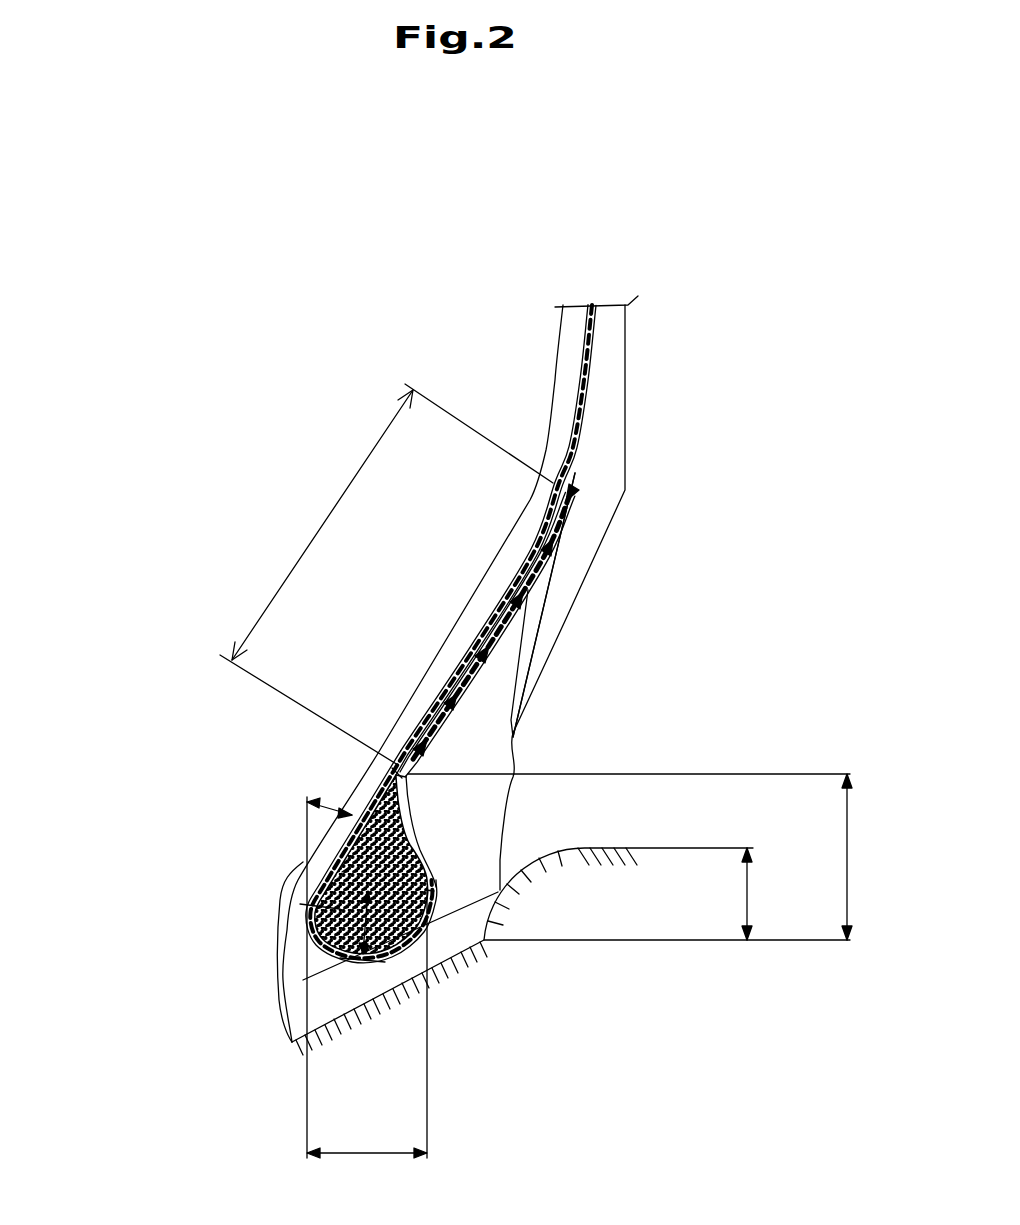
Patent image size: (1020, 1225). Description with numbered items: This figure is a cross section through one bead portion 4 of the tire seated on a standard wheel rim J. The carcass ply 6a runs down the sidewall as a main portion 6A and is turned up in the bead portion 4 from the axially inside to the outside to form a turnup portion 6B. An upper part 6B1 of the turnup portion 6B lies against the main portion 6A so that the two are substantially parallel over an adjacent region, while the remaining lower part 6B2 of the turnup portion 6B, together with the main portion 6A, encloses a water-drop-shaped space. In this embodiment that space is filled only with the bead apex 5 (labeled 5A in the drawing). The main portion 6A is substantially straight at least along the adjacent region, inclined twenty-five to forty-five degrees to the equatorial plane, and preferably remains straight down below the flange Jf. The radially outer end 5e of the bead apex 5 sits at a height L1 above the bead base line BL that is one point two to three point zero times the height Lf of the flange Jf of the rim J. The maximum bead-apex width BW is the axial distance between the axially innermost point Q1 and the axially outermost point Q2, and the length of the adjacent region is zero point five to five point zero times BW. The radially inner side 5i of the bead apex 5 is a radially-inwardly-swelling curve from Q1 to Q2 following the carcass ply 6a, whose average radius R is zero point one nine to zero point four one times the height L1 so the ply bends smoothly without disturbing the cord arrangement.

The bead portion 4 is at (221, 719).
The bead apex 5 is at (309, 901).
The bead core 5A is at (300, 902).
The radially outer end of the bead apex 5e is at (391, 758).
The radially inner side of the bead apex 5i is at (383, 962).
The carcass ply 6a is at (581, 634).
The main portion 6A is at (577, 433).
The turnup portion 6B is at (570, 515).
The upper part of the turnup portion 6B1 is at (495, 660).
The lower part of the turnup portion 6B2 is at (410, 844).
The axially innermost point Q1 is at (301, 904).
The axially outermost point Q2 is at (428, 893).
The average radius R is at (362, 955).
The bead apex height L1 is at (850, 841).
The flange height Lf is at (750, 890).
The maximum bead-apex width BW is at (368, 1158).
The bead base line BL is at (700, 940).
The flange Jf is at (577, 855).
The standard wheel rim J is at (522, 951).